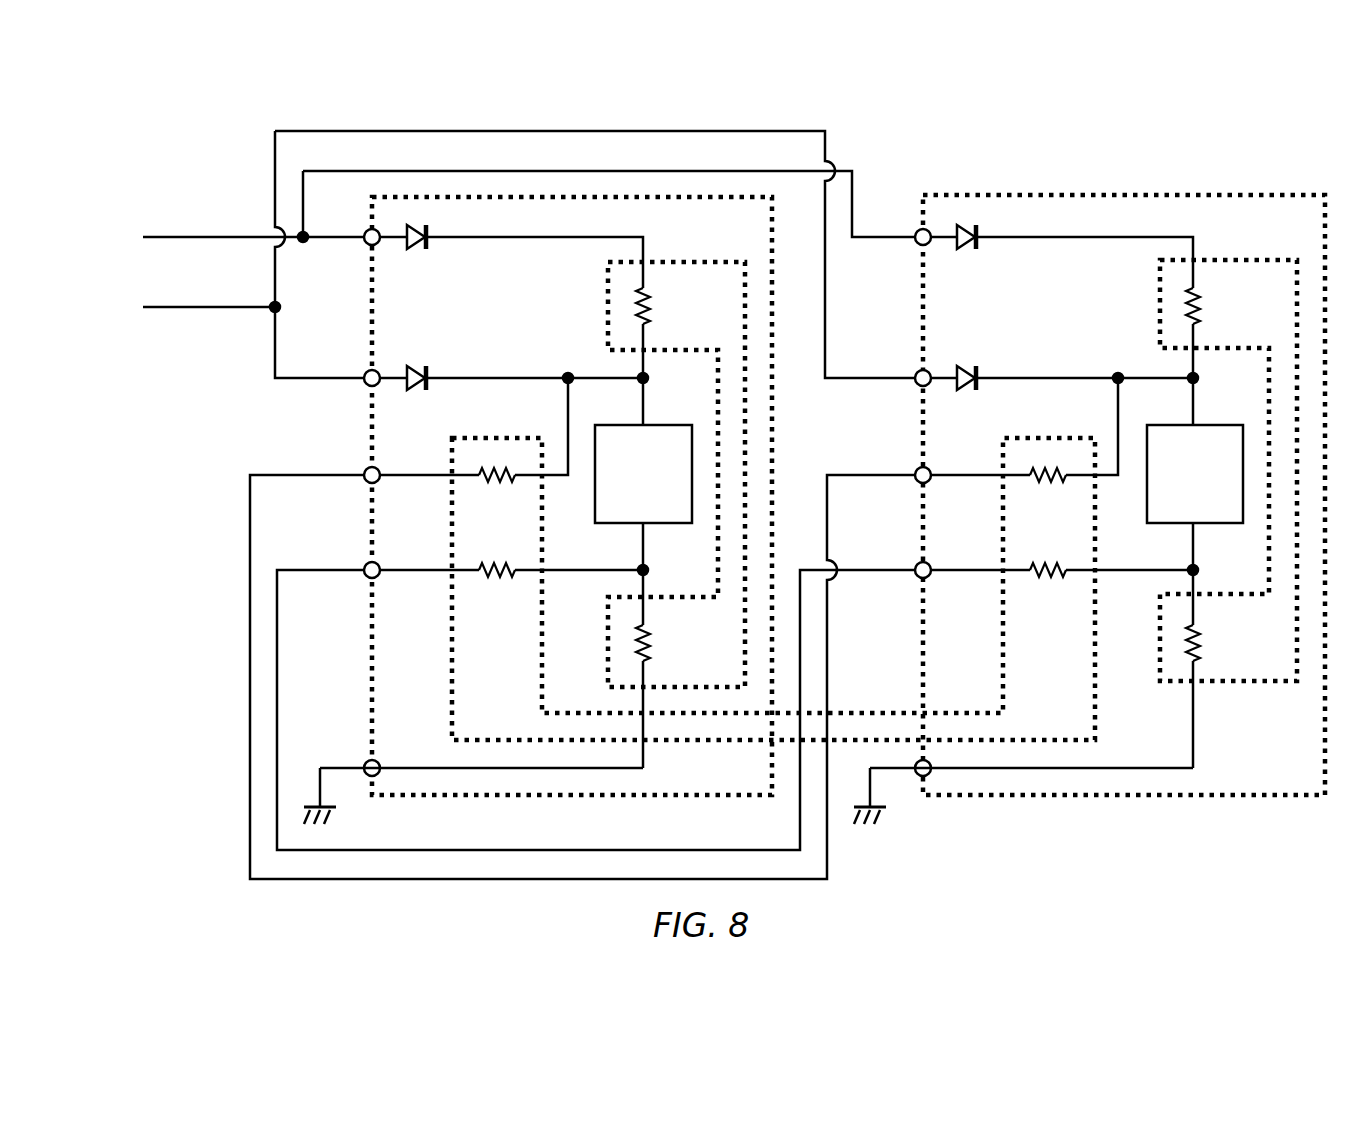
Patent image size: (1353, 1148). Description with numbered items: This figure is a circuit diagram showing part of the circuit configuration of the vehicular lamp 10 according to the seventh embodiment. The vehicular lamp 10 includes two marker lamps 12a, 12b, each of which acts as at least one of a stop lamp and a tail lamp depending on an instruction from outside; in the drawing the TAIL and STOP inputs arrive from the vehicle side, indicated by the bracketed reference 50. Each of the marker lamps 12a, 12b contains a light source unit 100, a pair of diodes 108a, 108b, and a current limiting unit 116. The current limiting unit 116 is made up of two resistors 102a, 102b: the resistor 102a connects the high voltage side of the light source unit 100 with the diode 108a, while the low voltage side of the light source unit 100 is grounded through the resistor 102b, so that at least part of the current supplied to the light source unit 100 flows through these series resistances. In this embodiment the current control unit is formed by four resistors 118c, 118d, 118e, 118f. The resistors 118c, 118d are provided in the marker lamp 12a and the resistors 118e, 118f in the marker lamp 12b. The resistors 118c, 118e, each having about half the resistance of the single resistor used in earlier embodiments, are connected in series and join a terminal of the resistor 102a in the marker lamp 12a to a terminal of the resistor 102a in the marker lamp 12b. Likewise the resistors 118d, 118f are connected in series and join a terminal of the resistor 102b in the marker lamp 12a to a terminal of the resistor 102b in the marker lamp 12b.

The vehicular lamp 10 is at (1240, 100).
The marker lamp 12a is at (775, 418).
The marker lamp 12b is at (1106, 195).
The vehicle-side power supply (TAIL/STOP) 50 is at (150, 200).
The light source unit 100 is at (666, 425).
The resistor 102a is at (650, 305).
The resistor 102b is at (650, 640).
The diode 108a is at (428, 243).
The diode 108b is at (428, 373).
The current limiting unit 116 is at (692, 262).
The resistor 118c is at (497, 468).
The resistor 118d is at (505, 578).
The resistor 118e is at (1050, 468).
The resistor 118f is at (1055, 578).